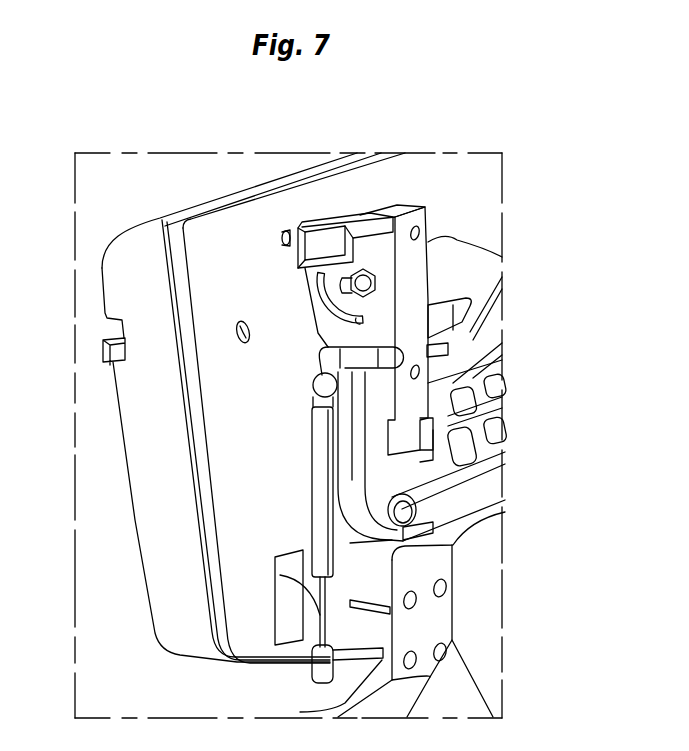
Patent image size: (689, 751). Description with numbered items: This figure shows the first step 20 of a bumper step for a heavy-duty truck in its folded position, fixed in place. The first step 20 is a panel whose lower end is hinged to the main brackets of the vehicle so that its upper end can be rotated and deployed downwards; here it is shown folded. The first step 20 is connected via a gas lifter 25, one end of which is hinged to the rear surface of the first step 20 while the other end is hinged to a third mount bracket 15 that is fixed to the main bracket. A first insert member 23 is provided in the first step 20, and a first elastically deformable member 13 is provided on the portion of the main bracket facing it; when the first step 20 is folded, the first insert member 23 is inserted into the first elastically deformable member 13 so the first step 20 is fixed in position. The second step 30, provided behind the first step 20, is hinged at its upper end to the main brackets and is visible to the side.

The first elastically deformable member 13 is at (296, 232).
The third mount bracket 15 is at (415, 255).
The first step 20 is at (147, 480).
The first insert member 23 is at (282, 237).
The gas lifter 25 is at (322, 515).
The second step 30 is at (493, 408).